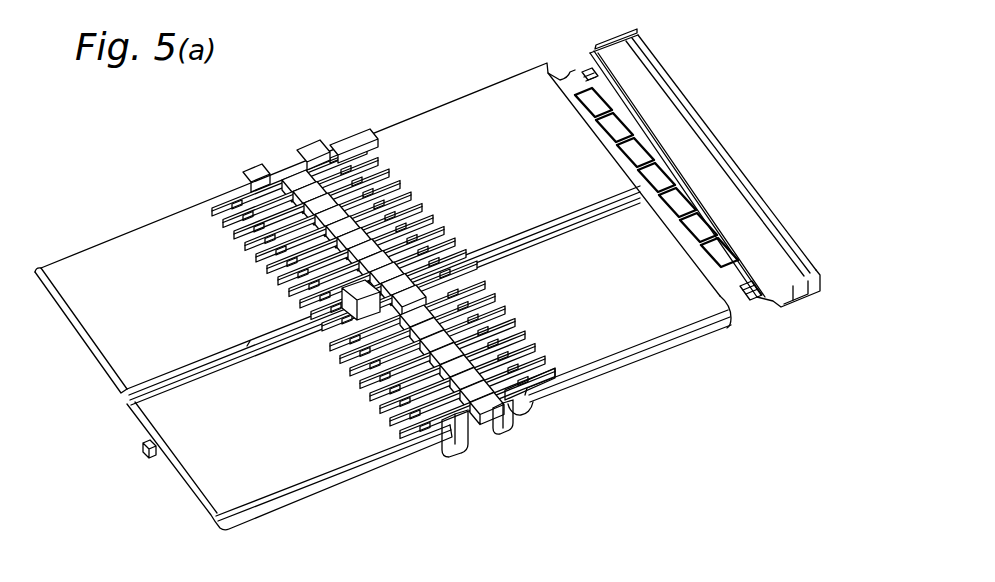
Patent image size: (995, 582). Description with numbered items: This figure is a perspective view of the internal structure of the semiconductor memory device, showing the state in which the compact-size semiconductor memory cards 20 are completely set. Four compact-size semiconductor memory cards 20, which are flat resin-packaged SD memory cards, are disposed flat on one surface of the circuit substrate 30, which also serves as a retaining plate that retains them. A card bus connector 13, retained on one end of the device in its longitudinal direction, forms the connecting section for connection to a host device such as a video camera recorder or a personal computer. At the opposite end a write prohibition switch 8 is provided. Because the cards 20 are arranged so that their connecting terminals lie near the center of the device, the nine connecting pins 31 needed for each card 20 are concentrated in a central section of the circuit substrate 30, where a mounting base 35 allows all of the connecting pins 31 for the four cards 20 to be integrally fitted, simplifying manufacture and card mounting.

The compact-size semiconductor memory card 20 is at (165, 227).
The card bus connector 13 is at (717, 132).
The connecting pins 31 is at (388, 168).
The circuit substrate 30 is at (458, 460).
The mounting base 35 is at (483, 437).
The write prohibition switch 8 is at (145, 450).